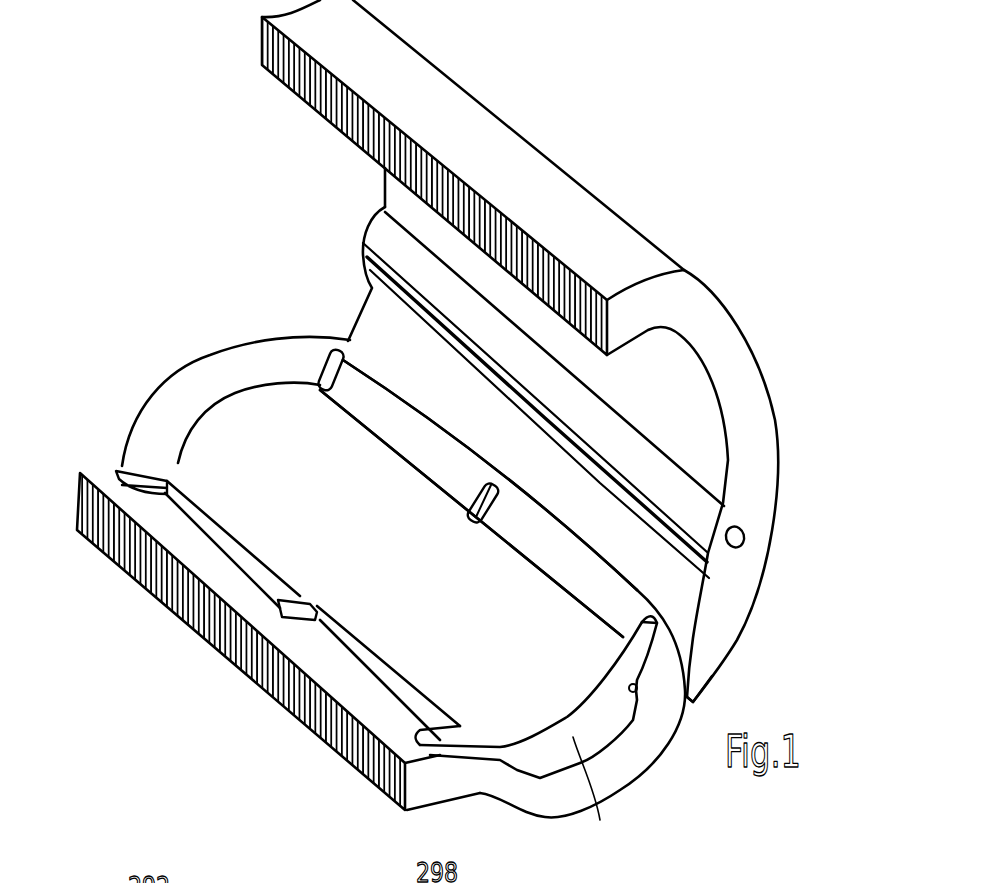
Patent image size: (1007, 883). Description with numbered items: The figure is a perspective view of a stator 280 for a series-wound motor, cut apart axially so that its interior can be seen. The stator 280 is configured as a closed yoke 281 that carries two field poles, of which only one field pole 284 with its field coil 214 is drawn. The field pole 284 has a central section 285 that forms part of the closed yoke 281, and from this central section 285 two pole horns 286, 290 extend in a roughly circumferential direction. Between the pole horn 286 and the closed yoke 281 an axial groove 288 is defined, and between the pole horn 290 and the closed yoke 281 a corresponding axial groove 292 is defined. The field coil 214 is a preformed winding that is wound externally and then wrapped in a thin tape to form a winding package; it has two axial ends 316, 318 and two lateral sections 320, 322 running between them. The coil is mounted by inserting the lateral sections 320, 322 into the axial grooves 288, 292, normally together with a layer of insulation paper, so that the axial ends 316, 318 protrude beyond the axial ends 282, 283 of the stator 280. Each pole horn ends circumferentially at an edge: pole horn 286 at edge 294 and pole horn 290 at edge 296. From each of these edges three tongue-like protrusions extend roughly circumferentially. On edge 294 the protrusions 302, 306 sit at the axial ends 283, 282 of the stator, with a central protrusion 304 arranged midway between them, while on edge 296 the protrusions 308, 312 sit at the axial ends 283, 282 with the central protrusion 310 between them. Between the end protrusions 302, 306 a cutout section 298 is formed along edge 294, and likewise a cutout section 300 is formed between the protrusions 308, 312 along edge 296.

The field coil 214 is at (255, 322).
The stator 280 is at (649, 175).
The closed yoke 281 is at (520, 180).
The axial end of the stator 282 is at (737, 365).
The axial end of the stator 283 is at (385, 205).
The field pole 284 is at (392, 546).
The central section 285 is at (573, 737).
The pole horn 286 is at (637, 647).
The axial groove 288 is at (637, 687).
The pole horn 290 is at (395, 810).
The axial groove 292 is at (510, 737).
The edge 294 is at (545, 562).
The edge 296 is at (380, 627).
The cutout section 298 is at (418, 440).
The cutout section 300 is at (247, 570).
The protrusion 302 is at (345, 372).
The central protrusion 304 is at (497, 500).
The protrusion 306 is at (637, 602).
The protrusion 308 is at (126, 466).
The central protrusion 310 is at (282, 590).
The protrusion 312 is at (437, 703).
The axial end of the field coil 316 is at (193, 360).
The axial end of the field coil 318 is at (623, 775).
The lateral section 320 is at (553, 513).
The lateral section 322 is at (317, 660).